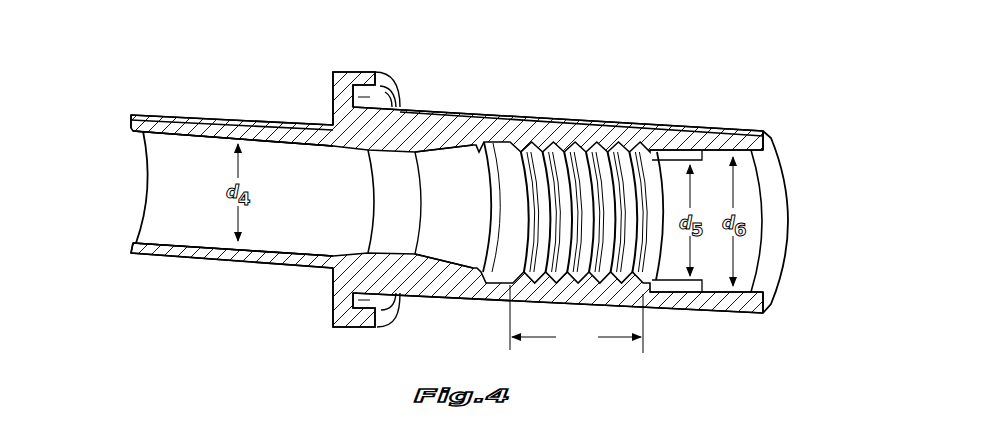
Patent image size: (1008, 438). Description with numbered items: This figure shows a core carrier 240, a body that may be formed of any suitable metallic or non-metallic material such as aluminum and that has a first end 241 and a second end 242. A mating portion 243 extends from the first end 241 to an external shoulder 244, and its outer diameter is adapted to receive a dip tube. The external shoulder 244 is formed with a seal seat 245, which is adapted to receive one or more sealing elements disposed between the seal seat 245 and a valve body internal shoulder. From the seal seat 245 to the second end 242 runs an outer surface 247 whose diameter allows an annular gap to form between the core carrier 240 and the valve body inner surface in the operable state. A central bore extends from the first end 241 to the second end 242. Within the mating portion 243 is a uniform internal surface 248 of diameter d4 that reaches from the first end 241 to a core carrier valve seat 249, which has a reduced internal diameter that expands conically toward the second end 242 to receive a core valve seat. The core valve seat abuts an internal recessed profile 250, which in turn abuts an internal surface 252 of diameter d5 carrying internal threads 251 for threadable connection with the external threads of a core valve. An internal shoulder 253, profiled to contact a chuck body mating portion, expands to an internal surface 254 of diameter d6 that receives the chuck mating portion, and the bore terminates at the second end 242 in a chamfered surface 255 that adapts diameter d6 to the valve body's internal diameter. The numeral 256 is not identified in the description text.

The core carrier 240 is at (545, 96).
The first end 241 is at (136, 190).
The second end 242 is at (801, 250).
The mating portion 243 is at (195, 113).
The external shoulder 244 is at (332, 98).
The seal seat 245 is at (399, 105).
The outer surface 247 is at (467, 112).
The uniform internal surface 248 is at (198, 222).
The core carrier valve seat 249 is at (430, 247).
The internal recessed profile 250 is at (480, 278).
The internal threads 251 is at (576, 319).
The internal surface 252 is at (608, 128).
The internal shoulder 253 is at (683, 157).
The internal surface 254 is at (702, 284).
The chamfered surface 255 is at (773, 177).
The inlet end face 256 is at (132, 244).